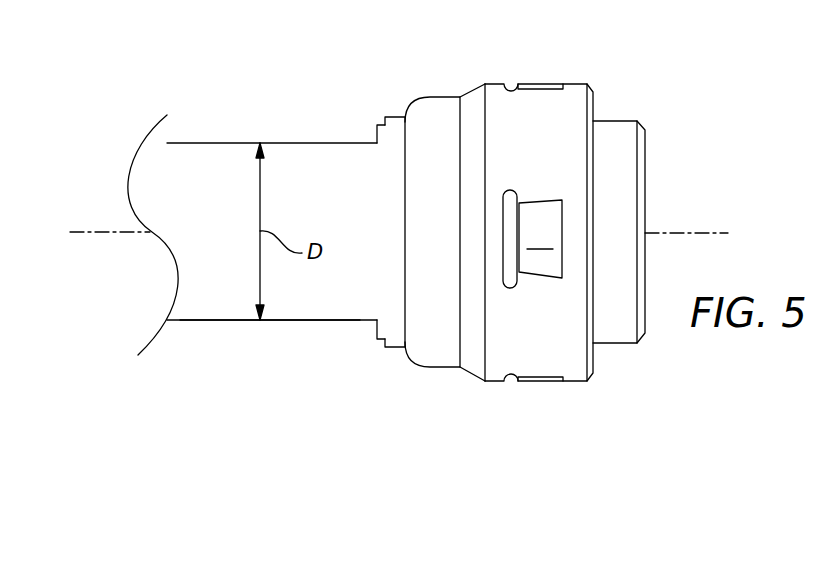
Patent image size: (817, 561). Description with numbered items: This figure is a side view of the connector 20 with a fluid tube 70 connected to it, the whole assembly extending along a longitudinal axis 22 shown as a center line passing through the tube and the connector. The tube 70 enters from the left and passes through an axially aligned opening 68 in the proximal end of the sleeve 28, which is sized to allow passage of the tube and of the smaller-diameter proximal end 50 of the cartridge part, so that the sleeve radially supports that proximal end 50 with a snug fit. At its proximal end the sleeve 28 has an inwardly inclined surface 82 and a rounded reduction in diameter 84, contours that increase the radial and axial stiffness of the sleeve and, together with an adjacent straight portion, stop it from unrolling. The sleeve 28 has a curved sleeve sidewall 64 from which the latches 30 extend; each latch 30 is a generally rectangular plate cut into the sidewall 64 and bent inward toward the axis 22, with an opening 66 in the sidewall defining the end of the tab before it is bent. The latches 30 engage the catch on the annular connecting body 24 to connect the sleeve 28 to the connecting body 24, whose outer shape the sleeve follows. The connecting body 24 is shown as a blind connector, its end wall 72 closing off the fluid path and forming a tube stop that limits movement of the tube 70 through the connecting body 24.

The connector 20 is at (566, 71).
The longitudinal axis 22 is at (112, 234).
The connecting body 24 is at (614, 371).
The sleeve 28 is at (455, 390).
The latch 30 is at (540, 239).
The proximal end of the cartridge part 50 is at (381, 338).
The sleeve sidewall 64 is at (533, 364).
The opening 66 is at (512, 190).
The opening 68 is at (393, 347).
The fluid tube 70 is at (205, 334).
The end wall 72 is at (633, 190).
The inwardly inclined surface 82 is at (473, 87).
The rounded reduction in diameter 84 is at (413, 103).